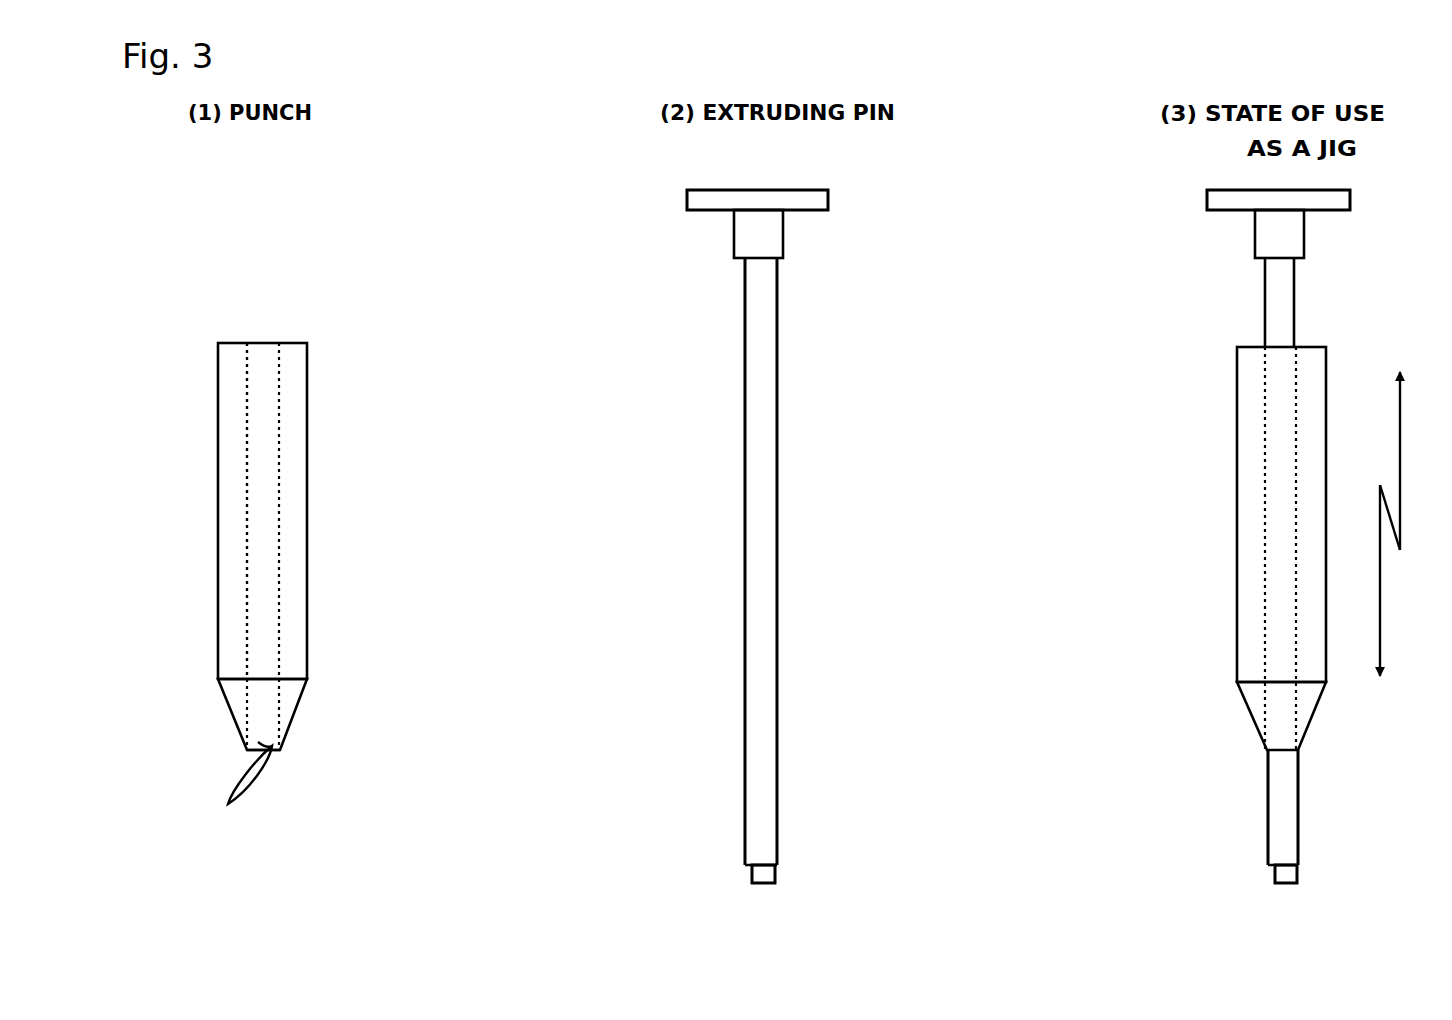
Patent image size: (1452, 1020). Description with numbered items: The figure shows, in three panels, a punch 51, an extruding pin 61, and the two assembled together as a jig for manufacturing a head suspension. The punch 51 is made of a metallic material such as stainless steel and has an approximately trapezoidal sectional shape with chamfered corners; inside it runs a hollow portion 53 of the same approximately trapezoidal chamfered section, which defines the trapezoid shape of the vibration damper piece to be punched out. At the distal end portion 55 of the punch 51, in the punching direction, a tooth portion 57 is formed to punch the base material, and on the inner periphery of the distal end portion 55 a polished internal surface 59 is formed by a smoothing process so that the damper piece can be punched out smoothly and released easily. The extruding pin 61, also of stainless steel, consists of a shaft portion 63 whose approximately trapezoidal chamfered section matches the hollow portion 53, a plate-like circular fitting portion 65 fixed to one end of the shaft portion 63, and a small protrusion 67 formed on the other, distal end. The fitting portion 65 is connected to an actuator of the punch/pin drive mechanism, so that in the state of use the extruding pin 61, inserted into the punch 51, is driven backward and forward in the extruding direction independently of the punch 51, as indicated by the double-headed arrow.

The punch 51 is at (335, 335).
The hollow portion 53 is at (266, 469).
The distal end portion 55 is at (290, 698).
The tooth portion 57 is at (273, 752).
The internal surface 59 is at (242, 794).
The extruding pin 61 is at (832, 244).
The shaft portion 63 is at (760, 463).
The plate-like circular fitting portion 65 is at (700, 188).
The small protrusion 67 is at (775, 880).